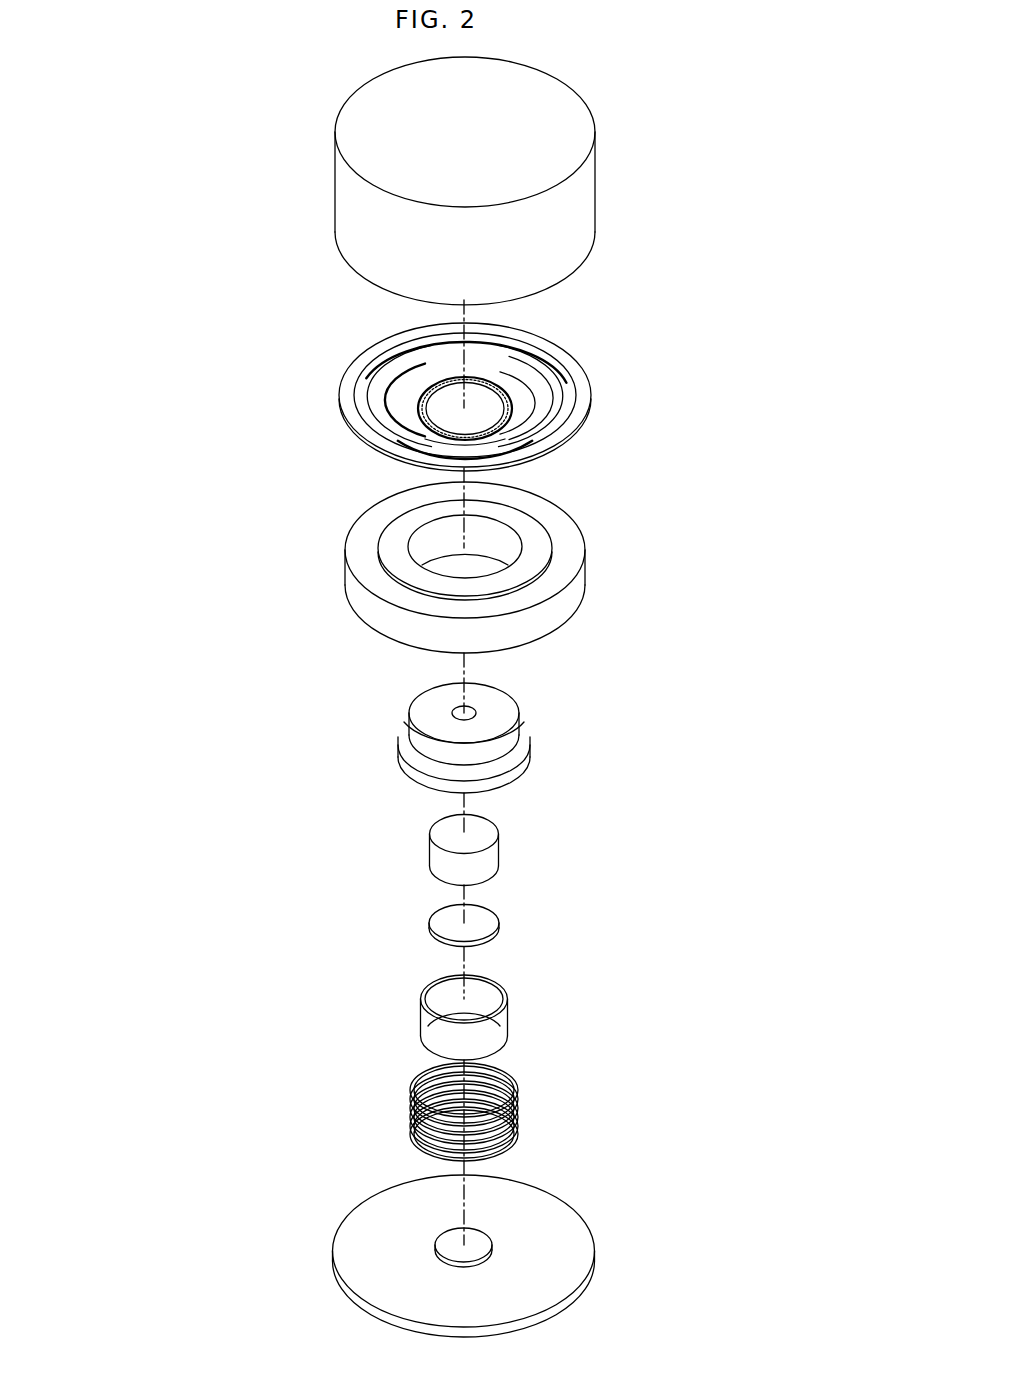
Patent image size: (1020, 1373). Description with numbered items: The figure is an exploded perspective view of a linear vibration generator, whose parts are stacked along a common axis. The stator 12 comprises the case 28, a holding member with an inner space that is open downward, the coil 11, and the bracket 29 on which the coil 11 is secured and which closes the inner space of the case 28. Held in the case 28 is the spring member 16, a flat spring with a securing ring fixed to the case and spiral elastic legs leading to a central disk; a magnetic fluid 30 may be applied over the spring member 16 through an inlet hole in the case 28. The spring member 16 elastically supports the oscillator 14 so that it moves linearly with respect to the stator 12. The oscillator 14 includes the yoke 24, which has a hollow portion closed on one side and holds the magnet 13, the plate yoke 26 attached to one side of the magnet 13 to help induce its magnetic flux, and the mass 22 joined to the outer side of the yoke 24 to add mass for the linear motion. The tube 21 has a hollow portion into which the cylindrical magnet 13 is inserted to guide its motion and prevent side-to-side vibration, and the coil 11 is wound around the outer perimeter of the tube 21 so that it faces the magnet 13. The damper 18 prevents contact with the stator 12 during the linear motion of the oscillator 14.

The stator 12 is at (218, 1222).
The case 28 is at (348, 223).
The spring member 16 is at (585, 392).
The magnetic fluid 30 is at (508, 390).
The mass 22 is at (575, 556).
The yoke 24 is at (508, 713).
The oscillator 14 is at (725, 558).
The magnet 13 is at (493, 833).
The plate yoke 26 is at (485, 917).
The tube 21 is at (502, 1022).
The coil 11 is at (407, 1120).
The bracket 29 is at (347, 1235).
The damper 18 is at (483, 1245).